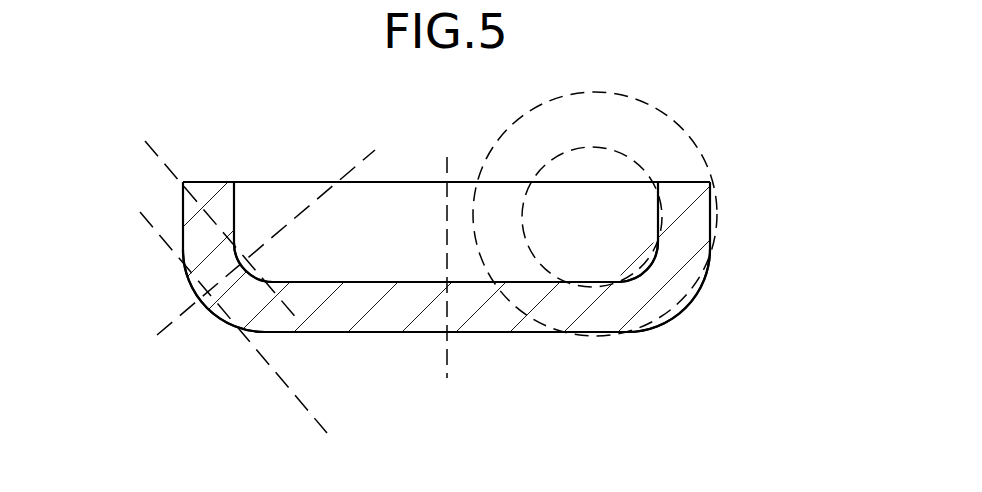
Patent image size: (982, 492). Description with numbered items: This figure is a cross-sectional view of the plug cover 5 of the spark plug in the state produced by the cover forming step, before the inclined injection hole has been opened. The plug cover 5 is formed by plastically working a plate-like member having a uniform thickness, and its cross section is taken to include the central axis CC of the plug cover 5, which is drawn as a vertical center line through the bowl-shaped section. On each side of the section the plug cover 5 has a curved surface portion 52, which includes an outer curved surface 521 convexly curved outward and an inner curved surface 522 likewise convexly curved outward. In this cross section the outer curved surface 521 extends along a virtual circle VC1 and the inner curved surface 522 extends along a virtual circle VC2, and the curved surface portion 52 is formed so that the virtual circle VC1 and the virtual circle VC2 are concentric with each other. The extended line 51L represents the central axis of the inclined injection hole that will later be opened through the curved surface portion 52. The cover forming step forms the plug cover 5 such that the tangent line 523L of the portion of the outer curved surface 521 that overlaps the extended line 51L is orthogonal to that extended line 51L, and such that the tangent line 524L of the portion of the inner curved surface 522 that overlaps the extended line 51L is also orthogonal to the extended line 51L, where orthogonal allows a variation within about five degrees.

The plug cover 5 is at (563, 380).
The curved surface portion 52 is at (232, 298).
The outer curved surface 521 is at (207, 297).
The inner curved surface 522 is at (244, 257).
The extended line of the central axis of the inclined injection hole 51L is at (157, 335).
The tangent line 523L is at (266, 337).
The tangent line 524L is at (298, 320).
The central axis CC is at (446, 251).
The virtual circle VC1 is at (653, 108).
The virtual circle VC2 is at (637, 162).